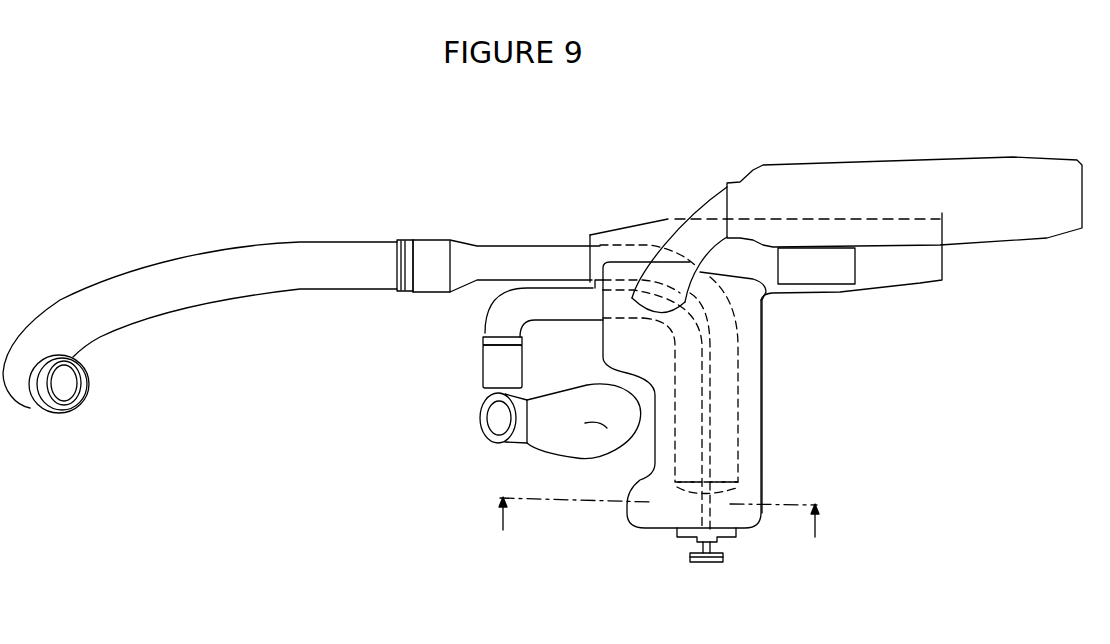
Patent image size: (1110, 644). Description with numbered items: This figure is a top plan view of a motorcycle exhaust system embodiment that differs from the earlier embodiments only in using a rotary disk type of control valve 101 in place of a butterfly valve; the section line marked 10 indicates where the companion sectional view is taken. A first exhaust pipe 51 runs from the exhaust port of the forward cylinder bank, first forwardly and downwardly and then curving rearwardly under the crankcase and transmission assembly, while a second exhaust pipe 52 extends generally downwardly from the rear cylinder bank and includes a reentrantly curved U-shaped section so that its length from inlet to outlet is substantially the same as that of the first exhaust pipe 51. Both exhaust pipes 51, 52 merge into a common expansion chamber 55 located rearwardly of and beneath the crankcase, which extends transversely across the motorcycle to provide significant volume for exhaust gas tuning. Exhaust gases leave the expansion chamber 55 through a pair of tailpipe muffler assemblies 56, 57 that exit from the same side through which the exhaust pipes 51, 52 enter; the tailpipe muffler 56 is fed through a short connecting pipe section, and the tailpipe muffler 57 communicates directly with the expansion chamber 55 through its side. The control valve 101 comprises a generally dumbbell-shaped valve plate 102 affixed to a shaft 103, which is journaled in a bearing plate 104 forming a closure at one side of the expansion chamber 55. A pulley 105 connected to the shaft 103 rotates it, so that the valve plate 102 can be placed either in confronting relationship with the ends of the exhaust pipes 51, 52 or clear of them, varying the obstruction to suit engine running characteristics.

The first exhaust pipe 51 is at (340, 242).
The second exhaust pipe 52 is at (480, 332).
The expansion chamber 55 is at (760, 387).
The tailpipe muffler assembly 56 is at (1000, 155).
The tailpipe muffler assembly 57 is at (920, 283).
The control valve 101 is at (733, 517).
The valve plate 102 is at (733, 502).
The shaft 103 is at (703, 510).
The bearing plate 104 is at (677, 542).
The pulley 105 is at (688, 563).
The section line 10- 10 is at (663, 520).